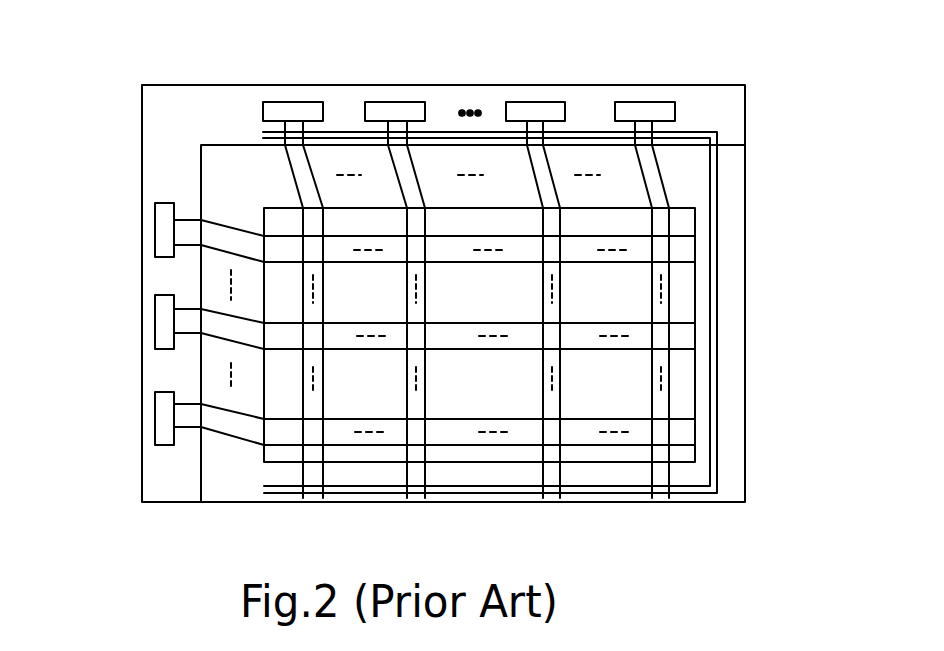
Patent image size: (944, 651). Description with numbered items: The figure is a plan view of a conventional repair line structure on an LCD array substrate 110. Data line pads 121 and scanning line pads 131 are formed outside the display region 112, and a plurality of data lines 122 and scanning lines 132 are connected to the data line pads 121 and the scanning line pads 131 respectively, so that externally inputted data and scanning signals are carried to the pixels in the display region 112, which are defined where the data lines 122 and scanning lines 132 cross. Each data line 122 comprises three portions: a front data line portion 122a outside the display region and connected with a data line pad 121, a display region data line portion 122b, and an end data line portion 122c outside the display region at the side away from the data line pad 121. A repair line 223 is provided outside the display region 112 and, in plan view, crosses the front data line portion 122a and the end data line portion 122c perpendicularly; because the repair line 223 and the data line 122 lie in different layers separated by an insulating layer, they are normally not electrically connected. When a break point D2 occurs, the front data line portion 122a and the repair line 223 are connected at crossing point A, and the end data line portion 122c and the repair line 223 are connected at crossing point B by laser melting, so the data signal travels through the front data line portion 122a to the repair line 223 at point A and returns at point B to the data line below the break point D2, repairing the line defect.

The LCD array substrate 110 is at (132, 78).
The display region 112 is at (293, 392).
The data line pads 121 is at (390, 116).
The data lines 122 is at (585, 309).
The front data line portion 122a is at (402, 177).
The display region data line portion 122b is at (408, 275).
The end data line portion 122c is at (408, 469).
The scanning line pads 131 is at (168, 419).
The scanning lines 132 is at (347, 446).
The repair line 223 is at (443, 132).
The crossing point A is at (390, 132).
The crossing point B is at (407, 493).
The break point D2 is at (404, 300).